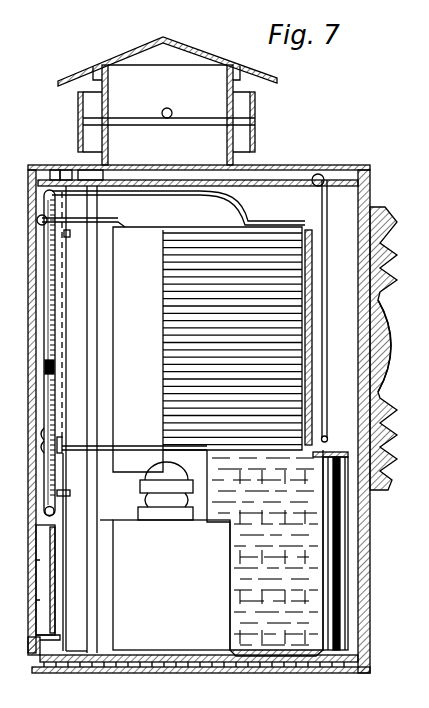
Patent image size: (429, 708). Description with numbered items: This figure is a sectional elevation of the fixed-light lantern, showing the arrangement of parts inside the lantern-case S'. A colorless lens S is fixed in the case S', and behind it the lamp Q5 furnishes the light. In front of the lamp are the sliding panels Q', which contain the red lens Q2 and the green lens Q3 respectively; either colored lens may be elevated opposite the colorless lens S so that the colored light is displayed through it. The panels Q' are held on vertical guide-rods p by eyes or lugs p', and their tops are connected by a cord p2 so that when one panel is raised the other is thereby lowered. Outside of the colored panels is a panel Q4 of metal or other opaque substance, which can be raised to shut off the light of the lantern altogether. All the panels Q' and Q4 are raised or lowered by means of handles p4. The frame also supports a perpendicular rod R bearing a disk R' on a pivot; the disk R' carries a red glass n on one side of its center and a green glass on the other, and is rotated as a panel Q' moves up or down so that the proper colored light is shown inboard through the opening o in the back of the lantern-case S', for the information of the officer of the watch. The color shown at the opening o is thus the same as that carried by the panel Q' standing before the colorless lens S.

The colorless lens S is at (389, 348).
The lantern-case S' is at (20, 411).
The perpendicular rod R is at (62, 353).
The disk R' is at (29, 393).
The opening o is at (31, 437).
The vertical guide-rods p is at (132, 544).
The eyes or lugs p' is at (71, 363).
The cord p2 is at (327, 292).
The handles p4 is at (118, 222).
The red glass n is at (178, 208).
The panels Q' is at (329, 343).
The red glass or lens Q2 is at (207, 349).
The green glass or lens Q3 is at (265, 553).
The opaque panel Q4 is at (343, 543).
The lamp Q5 is at (165, 556).